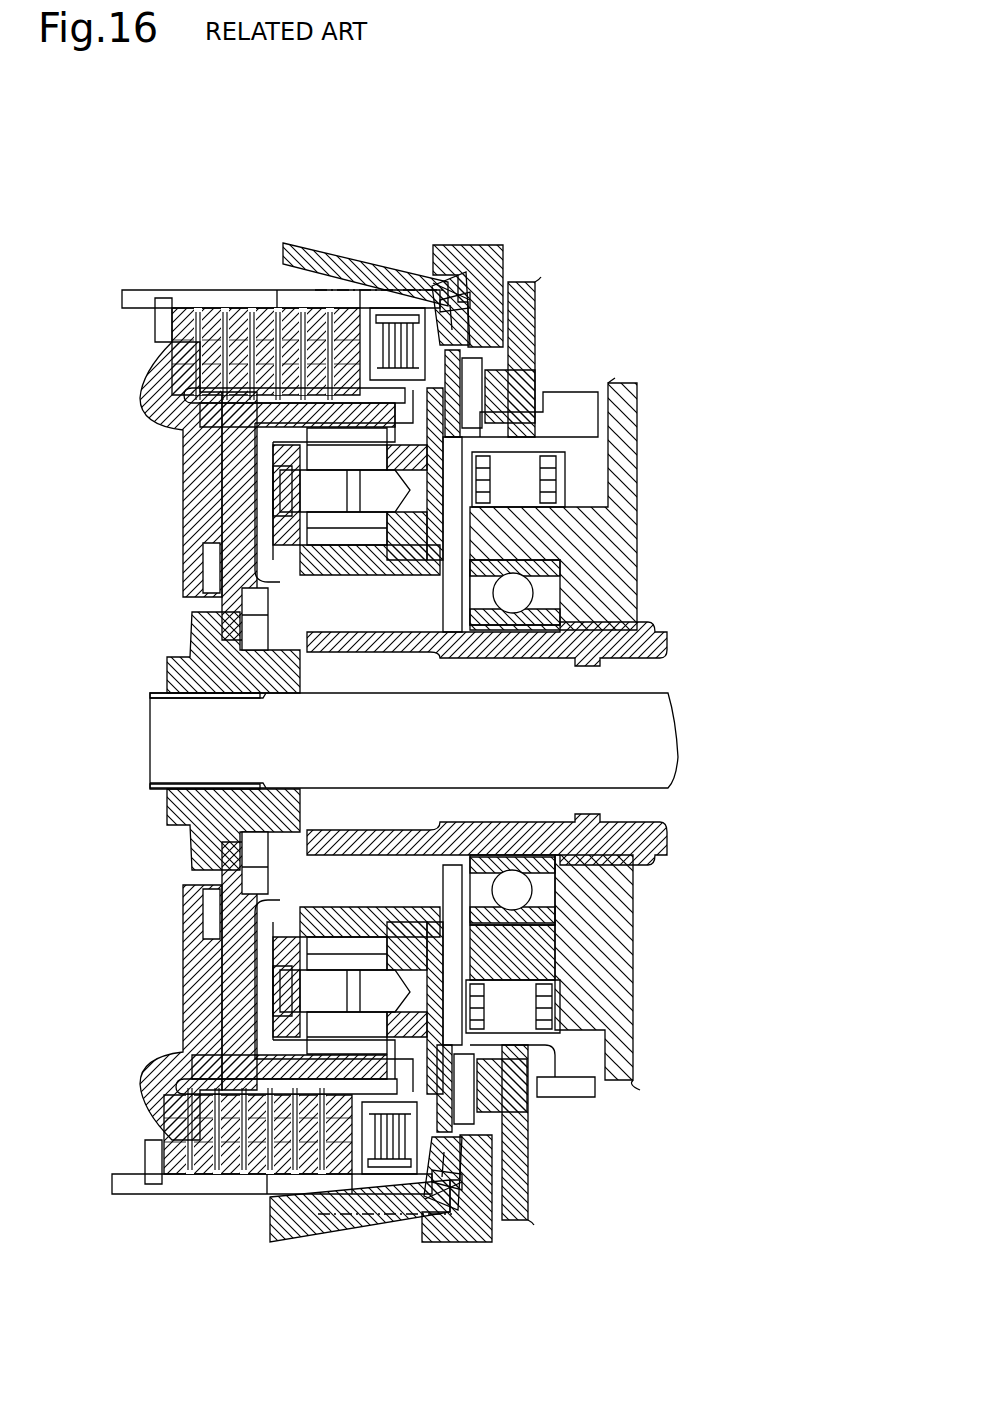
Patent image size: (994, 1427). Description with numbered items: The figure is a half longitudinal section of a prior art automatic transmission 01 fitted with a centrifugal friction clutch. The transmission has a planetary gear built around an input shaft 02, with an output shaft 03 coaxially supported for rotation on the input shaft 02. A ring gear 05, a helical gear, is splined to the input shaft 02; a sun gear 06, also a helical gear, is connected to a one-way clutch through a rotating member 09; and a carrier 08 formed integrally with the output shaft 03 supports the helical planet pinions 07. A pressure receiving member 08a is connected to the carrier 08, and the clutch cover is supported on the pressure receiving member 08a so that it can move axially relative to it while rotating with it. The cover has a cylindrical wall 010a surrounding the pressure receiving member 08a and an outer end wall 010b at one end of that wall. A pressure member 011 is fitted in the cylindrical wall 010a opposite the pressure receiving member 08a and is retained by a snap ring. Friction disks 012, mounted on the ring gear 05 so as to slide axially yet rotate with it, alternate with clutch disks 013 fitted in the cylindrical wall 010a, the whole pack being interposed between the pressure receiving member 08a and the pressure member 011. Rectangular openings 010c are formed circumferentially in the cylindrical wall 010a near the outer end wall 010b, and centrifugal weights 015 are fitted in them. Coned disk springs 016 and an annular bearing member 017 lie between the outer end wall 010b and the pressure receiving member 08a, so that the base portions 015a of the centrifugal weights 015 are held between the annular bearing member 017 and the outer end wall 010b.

The automatic transmission 01 is at (315, 170).
The input shaft 02 is at (172, 749).
The output shaft 03 is at (630, 645).
The ring gear 05 is at (250, 440).
The sun gear 06 is at (358, 555).
The planet pinions 07 is at (245, 462).
The carrier 08 is at (245, 612).
The pressure receiving member 08a is at (360, 300).
The rotating member 09 is at (565, 415).
The cylindrical wall 010a is at (190, 300).
The outer end wall 010b is at (495, 245).
The rectangular openings 010c is at (300, 290).
The pressure member 011 is at (195, 510).
The friction disks 012 is at (150, 327).
The clutch disks 013 is at (234, 1180).
The centrifugal weights 015 is at (290, 243).
The base portions 015a is at (448, 298).
The coned disk springs 016 is at (380, 330).
The annular bearing member 017 is at (440, 305).